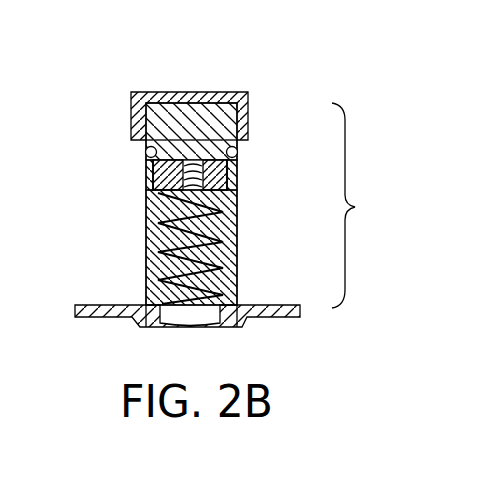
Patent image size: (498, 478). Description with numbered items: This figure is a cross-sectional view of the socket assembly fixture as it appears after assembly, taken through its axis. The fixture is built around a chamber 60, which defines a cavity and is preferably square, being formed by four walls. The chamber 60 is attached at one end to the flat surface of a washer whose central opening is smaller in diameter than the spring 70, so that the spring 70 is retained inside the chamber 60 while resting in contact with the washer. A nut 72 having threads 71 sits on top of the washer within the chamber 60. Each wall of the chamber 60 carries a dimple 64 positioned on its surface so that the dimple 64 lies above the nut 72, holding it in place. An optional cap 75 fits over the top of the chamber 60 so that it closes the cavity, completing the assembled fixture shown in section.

The chamber 60 is at (366, 205).
The dimple 64 is at (233, 157).
The spring 70 is at (158, 268).
The threads 71 is at (235, 168).
The nut 72 is at (152, 186).
The cap 75 is at (210, 91).